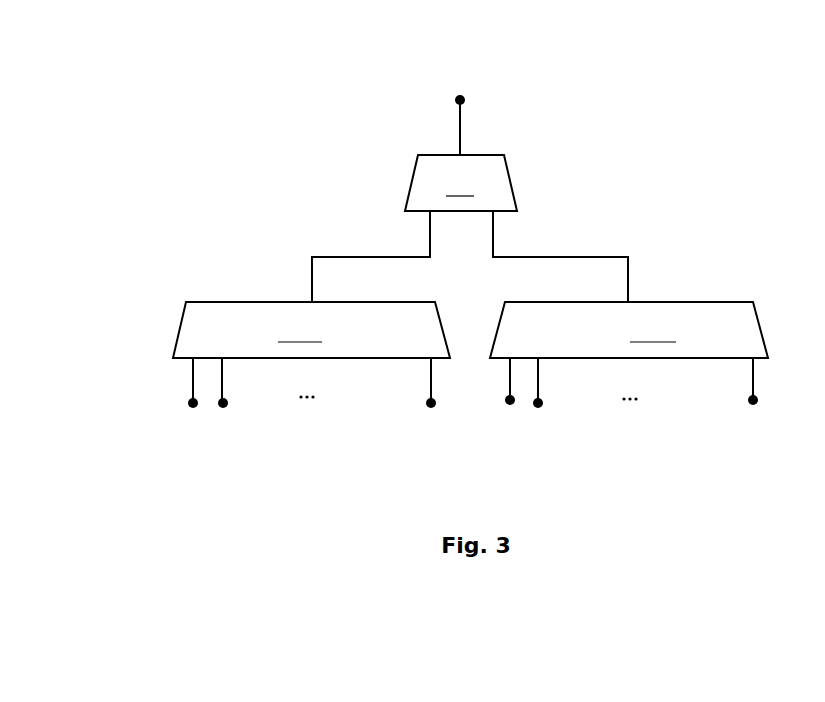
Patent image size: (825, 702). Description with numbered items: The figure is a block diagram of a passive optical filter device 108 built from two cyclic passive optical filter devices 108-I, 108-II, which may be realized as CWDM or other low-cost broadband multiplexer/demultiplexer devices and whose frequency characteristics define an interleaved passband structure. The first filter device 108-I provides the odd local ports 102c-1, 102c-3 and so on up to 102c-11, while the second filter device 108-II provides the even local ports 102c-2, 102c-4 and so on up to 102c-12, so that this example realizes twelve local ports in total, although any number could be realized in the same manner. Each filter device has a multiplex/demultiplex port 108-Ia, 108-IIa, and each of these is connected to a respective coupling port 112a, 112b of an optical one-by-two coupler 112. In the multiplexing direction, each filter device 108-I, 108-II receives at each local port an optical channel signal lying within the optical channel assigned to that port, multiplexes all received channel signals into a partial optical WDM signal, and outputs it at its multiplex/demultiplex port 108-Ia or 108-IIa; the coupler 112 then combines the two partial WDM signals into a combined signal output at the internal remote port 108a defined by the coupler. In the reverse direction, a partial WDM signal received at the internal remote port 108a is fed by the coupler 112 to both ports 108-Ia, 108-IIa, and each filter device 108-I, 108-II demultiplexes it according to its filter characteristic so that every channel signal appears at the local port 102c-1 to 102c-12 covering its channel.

The passive optical filter device 108 is at (610, 117).
The internal remote port 108a is at (455, 102).
The optical 1×2 coupler 112 is at (461, 183).
The coupling port 112a is at (427, 214).
The coupling port 112b is at (496, 214).
The cyclic passive optical filter device 108-I is at (311, 350).
The cyclic passive optical filter device 108-II is at (629, 351).
The multiplex/demultiplex port 108-Ia is at (311, 301).
The multiplex/demultiplex port 108-IIa is at (632, 300).
The local port 102c-1 is at (188, 405).
The local port 102c-3 is at (221, 408).
The local port 102c-11 is at (429, 408).
The local port 102c-2 is at (512, 405).
The local port 102c-4 is at (543, 406).
The local port 102c-12 is at (755, 405).